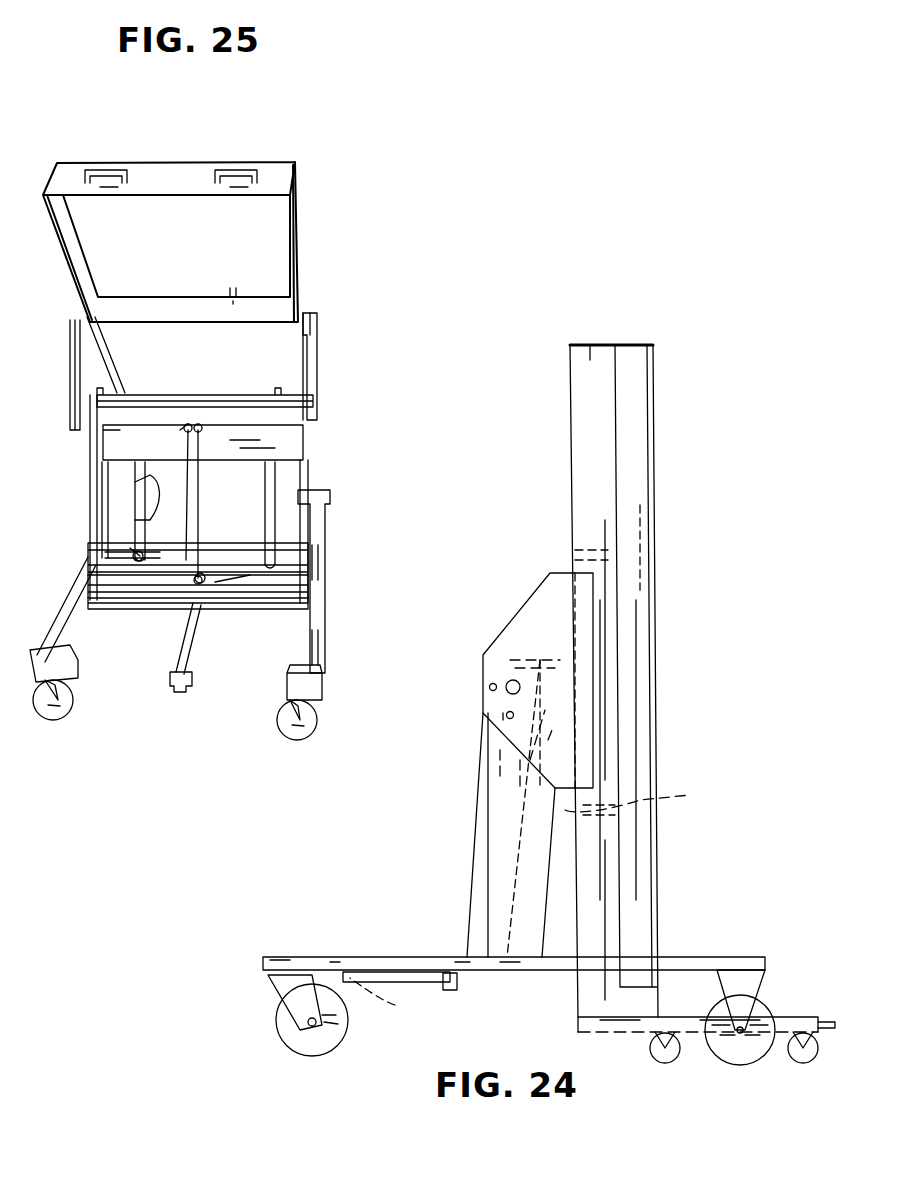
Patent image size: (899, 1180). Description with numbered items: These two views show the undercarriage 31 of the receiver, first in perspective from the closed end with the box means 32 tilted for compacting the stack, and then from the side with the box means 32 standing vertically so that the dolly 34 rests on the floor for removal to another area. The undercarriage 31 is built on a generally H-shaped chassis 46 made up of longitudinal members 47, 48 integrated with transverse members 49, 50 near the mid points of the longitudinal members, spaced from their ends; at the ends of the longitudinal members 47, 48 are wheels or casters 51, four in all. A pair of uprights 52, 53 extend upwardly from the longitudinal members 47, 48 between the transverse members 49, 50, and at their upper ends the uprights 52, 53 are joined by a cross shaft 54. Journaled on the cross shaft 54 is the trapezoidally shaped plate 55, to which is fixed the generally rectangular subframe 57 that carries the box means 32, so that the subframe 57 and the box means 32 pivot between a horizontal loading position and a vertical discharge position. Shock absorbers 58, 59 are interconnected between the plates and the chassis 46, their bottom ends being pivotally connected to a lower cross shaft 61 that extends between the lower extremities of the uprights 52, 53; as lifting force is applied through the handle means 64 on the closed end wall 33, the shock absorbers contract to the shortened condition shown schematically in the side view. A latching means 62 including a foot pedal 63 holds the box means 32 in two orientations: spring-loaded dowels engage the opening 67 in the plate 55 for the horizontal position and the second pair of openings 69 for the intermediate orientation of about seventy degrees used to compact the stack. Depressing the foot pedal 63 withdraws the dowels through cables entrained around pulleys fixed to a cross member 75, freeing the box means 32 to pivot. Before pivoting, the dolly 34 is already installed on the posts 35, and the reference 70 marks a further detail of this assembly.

In FIG. 25, the undercarriage 31 is at (322, 560).
In FIG. 25, the box means 32 is at (250, 258).
In FIG. 24, the box means 32 is at (662, 485).
In FIG. 25, the closed end wall 33 is at (178, 148).
In FIG. 24, the dolly 34 is at (822, 1020).
In FIG. 24, the posts 35 is at (690, 1032).
In FIG. 25, the chassis 46 is at (322, 660).
In FIG. 25, the longitudinal member 47 is at (322, 692).
In FIG. 24, the longitudinal member 47 is at (686, 955).
In FIG. 25, the longitudinal member 48 is at (68, 620).
In FIG. 25, the transverse member 49 is at (230, 614).
In FIG. 25, the transverse member 50 is at (212, 548).
In FIG. 25, the casters 51 is at (60, 712).
In FIG. 24, the casters 51 is at (290, 1035).
In FIG. 25, the upright 52 is at (318, 496).
In FIG. 24, the upright 52 is at (480, 866).
In FIG. 25, the upright 53 is at (90, 475).
In FIG. 25, the cross shaft 54 is at (232, 393).
In FIG. 24, the cross shaft 54 is at (506, 682).
In FIG. 25, the trapezoidally shaped plate 55 is at (317, 365).
In FIG. 24, the subframe 57 is at (592, 345).
In FIG. 25, the shock absorber 58 is at (280, 490).
In FIG. 24, the shock absorber 58 is at (603, 692).
In FIG. 25, the shock absorber 59 is at (135, 510).
In FIG. 25, the lower cross shaft 61 is at (148, 565).
In FIG. 25, the latching means 62 is at (210, 495).
In FIG. 25, the foot pedal 63 is at (190, 684).
In FIG. 24, the foot pedal 63 is at (435, 992).
In FIG. 25, the handle means 64 is at (102, 166).
In FIG. 24, the opening 67 is at (490, 690).
In FIG. 24, the openings 69 is at (506, 718).
In FIG. 25, the cross member 70 is at (312, 600).
In FIG. 25, the cross member 75 is at (300, 452).